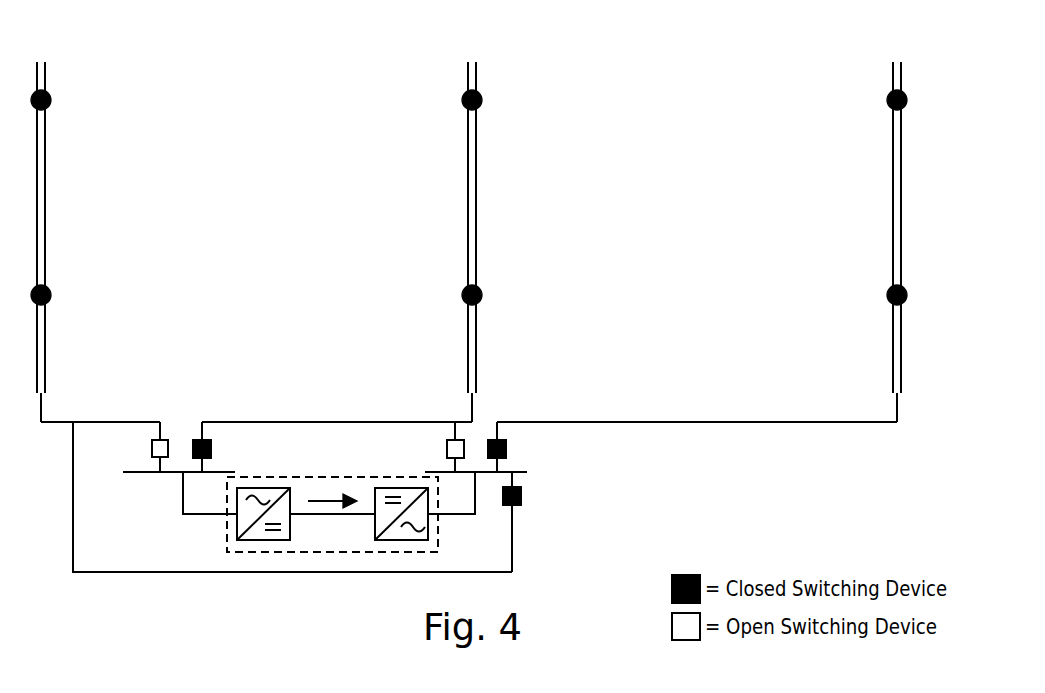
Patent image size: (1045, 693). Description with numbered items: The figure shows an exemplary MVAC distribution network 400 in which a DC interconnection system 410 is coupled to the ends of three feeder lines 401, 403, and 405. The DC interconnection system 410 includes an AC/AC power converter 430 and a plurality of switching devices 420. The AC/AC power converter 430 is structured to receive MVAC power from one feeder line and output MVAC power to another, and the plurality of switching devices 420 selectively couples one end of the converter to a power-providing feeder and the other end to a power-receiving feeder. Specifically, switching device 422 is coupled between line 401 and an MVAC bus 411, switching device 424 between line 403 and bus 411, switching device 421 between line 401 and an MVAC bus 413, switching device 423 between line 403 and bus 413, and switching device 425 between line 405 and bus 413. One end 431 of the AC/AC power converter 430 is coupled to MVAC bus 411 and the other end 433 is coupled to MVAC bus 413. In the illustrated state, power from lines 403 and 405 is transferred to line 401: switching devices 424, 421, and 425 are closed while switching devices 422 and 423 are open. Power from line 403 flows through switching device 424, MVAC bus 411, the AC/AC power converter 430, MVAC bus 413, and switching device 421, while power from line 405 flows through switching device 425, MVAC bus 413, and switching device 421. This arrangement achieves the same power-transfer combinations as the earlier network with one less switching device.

The MVAC distribution network 400 is at (646, 63).
The feeder line 401 is at (45, 175).
The feeder line 403 is at (476, 175).
The feeder line 405 is at (893, 175).
The DC interconnection system 410 is at (132, 495).
The MVAC bus 411 is at (150, 473).
The MVAC bus 413 is at (483, 475).
The plurality of switching devices 420 is at (530, 518).
The switching device 421 is at (522, 496).
The switching device 422 is at (152, 448).
The switching device 423 is at (447, 448).
The switching device 424 is at (212, 448).
The switching device 425 is at (507, 448).
The AC/AC power converter 430 is at (313, 477).
The end of AC/AC power converter 431 is at (228, 515).
The end of AC/AC power converter 433 is at (440, 515).